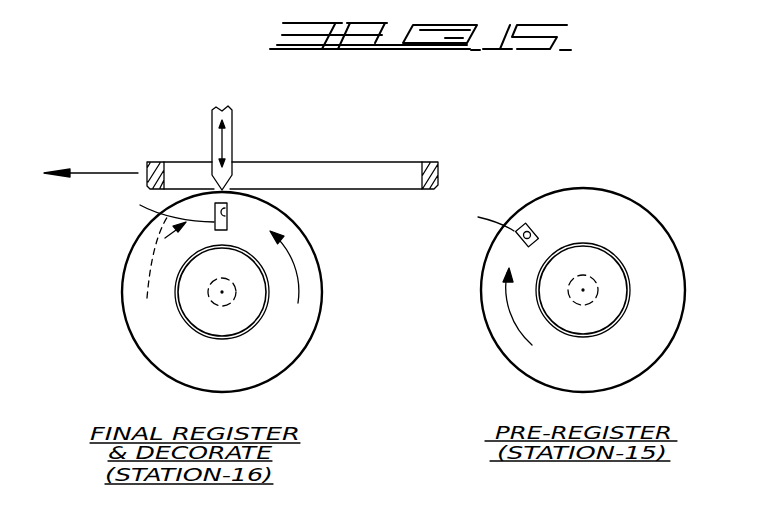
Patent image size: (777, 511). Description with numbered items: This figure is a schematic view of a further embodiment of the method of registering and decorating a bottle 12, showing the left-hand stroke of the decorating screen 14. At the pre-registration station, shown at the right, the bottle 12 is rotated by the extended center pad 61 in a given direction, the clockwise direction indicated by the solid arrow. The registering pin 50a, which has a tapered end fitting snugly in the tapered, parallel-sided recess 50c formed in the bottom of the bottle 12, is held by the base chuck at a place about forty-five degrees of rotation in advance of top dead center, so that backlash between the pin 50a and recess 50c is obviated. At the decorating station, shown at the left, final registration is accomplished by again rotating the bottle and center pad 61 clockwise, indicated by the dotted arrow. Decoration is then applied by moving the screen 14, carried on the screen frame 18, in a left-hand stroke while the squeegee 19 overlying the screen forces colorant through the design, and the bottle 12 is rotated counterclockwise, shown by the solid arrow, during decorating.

The bottle 12 is at (147, 313).
The decorating screen 14 is at (347, 187).
The screen frame 18 is at (438, 164).
The squeegee 19 is at (233, 121).
The registering pin 50a is at (228, 211).
The recess 50c is at (308, 214).
The center pad 61 is at (203, 308).